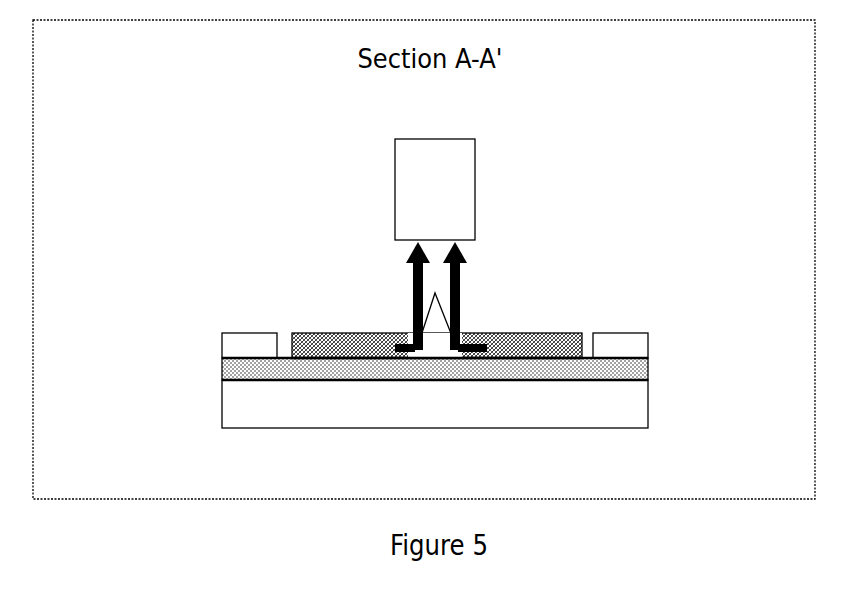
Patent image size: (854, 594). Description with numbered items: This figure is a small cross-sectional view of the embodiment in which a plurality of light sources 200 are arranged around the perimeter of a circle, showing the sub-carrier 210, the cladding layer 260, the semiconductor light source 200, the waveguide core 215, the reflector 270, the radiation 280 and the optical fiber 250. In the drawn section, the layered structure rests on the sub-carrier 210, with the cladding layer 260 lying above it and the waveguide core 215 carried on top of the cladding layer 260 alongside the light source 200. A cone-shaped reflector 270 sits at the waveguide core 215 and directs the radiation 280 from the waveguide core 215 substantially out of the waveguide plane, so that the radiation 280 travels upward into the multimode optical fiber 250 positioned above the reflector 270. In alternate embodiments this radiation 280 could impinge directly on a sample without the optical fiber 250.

The light source 200 is at (235, 345).
The substrate 210 is at (250, 408).
The waveguide core 215 is at (352, 338).
The multimode optical fiber 250 is at (435, 189).
The intermediate layer 260 is at (625, 368).
The cone-shaped reflector 270 is at (435, 345).
The radiation 280 is at (462, 295).